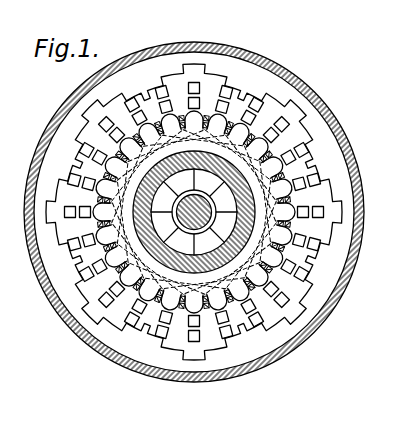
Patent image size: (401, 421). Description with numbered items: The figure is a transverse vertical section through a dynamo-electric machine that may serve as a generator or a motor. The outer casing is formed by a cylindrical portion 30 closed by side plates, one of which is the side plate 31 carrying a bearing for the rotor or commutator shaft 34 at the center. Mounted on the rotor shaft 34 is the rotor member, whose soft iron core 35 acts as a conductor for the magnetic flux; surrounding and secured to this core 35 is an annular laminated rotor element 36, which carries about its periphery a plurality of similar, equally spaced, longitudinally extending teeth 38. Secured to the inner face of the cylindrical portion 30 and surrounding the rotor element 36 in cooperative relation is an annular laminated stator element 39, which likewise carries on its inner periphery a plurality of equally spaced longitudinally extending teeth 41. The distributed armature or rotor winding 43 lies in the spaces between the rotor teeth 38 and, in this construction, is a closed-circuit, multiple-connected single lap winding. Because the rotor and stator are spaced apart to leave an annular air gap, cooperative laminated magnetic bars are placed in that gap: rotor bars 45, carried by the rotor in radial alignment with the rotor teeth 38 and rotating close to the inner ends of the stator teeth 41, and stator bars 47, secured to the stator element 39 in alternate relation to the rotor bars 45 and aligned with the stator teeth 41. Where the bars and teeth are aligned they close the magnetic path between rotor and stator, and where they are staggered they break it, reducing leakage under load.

The cylindrical portion of the casing 30 is at (221, 46).
The side plate 31 is at (191, 233).
The rotor shaft 34 is at (172, 207).
The soft iron core 35 is at (215, 206).
The rotor element 36 is at (277, 187).
The rotor teeth 38 is at (226, 117).
The stator element 39 is at (318, 116).
The stator teeth 41 is at (186, 66).
The armature winding 43 is at (287, 250).
The rotor bars 45 is at (267, 105).
The stator bars 47 is at (190, 101).